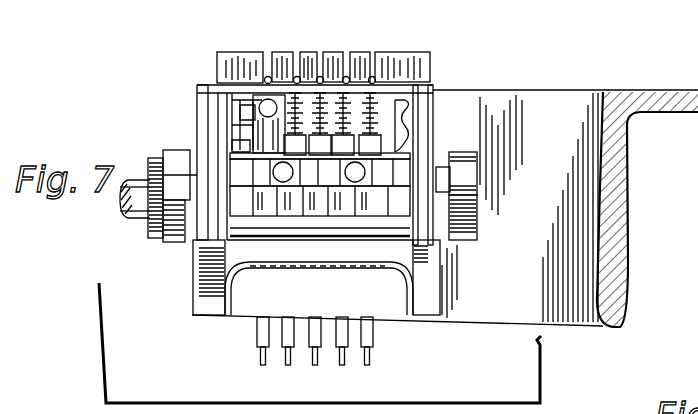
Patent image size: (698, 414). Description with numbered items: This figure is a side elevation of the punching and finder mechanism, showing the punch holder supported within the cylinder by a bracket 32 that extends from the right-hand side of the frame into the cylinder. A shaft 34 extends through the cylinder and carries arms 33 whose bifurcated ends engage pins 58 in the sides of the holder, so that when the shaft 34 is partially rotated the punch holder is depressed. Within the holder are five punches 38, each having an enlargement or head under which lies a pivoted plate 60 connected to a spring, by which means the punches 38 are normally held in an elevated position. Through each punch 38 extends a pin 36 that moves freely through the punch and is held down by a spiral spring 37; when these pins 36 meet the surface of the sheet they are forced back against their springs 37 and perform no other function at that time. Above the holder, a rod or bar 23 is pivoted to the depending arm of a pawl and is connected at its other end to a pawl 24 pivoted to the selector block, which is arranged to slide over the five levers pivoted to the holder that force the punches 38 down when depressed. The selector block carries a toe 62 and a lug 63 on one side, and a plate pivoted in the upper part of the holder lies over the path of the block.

The rod or bar 23 is at (308, 98).
The pawl 24 is at (262, 95).
The bracket 32 is at (622, 212).
The arms 33 is at (164, 236).
The shaft 34 is at (128, 214).
The pin 36 is at (365, 356).
The spiral spring 37 is at (380, 95).
The punches 38 is at (343, 338).
The pins 58 is at (178, 185).
The pivoted plate 60 is at (330, 238).
The toe 62 is at (250, 150).
The lug 63 is at (252, 123).